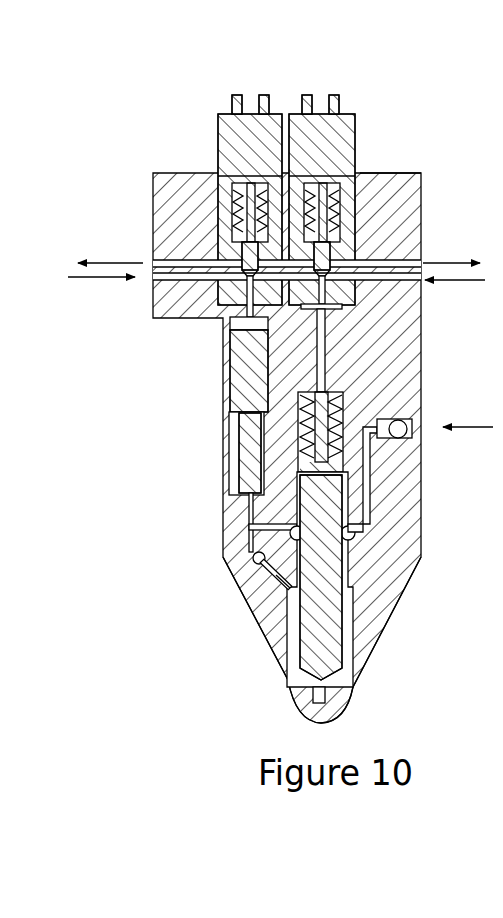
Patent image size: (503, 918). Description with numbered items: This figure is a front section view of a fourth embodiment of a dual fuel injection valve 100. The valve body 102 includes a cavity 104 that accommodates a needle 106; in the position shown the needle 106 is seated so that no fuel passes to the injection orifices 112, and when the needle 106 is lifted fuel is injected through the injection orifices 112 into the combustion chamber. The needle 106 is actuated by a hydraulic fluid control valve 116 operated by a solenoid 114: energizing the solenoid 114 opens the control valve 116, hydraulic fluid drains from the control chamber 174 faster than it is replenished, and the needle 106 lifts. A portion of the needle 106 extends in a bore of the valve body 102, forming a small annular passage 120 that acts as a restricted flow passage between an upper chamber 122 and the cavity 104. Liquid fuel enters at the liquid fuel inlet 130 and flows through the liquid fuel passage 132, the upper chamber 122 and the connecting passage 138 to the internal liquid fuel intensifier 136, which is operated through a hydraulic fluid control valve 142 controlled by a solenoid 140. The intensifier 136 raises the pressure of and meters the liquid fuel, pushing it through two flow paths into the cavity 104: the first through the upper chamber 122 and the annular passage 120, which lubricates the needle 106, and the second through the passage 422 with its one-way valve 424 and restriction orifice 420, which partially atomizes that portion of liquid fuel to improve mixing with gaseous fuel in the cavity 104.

The fuel injection valve 100 is at (412, 92).
The valve body 102 is at (398, 206).
The cavity 104 is at (357, 675).
The needle 106 is at (348, 665).
The injection orifices 112 is at (328, 704).
The solenoid 114 is at (328, 147).
The hydraulic fluid control valve 116 is at (400, 174).
The annular passage 120 is at (326, 590).
The upper chamber 122 is at (345, 536).
The liquid fuel inlet 130 is at (414, 429).
The liquid fuel passage 132 is at (373, 499).
The internal liquid fuel intensifier 136 is at (228, 365).
The connecting passage 138 is at (252, 515).
The solenoid 140 is at (250, 152).
The hydraulic fluid control valve 142 is at (223, 207).
The control chamber 174 is at (393, 345).
The restriction orifice 420 is at (270, 583).
The passage 422 is at (277, 603).
The one-way valve 424 is at (253, 561).